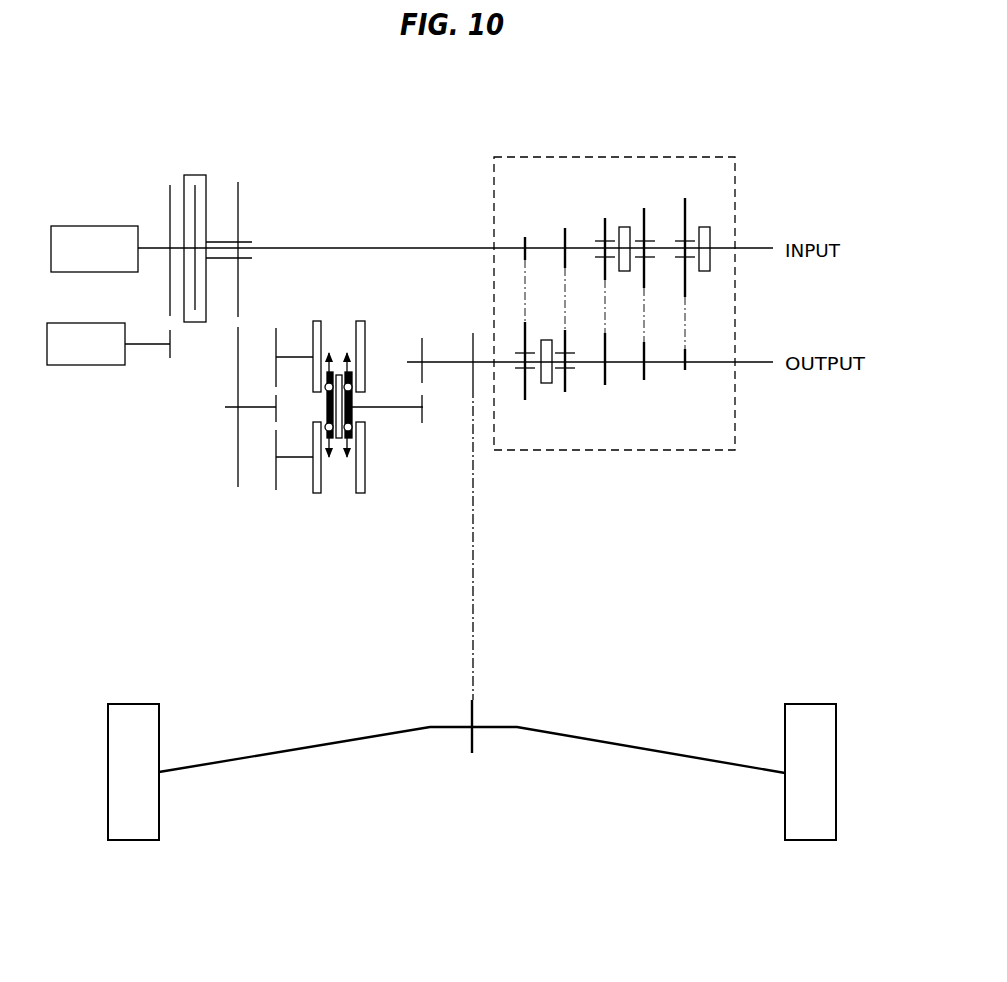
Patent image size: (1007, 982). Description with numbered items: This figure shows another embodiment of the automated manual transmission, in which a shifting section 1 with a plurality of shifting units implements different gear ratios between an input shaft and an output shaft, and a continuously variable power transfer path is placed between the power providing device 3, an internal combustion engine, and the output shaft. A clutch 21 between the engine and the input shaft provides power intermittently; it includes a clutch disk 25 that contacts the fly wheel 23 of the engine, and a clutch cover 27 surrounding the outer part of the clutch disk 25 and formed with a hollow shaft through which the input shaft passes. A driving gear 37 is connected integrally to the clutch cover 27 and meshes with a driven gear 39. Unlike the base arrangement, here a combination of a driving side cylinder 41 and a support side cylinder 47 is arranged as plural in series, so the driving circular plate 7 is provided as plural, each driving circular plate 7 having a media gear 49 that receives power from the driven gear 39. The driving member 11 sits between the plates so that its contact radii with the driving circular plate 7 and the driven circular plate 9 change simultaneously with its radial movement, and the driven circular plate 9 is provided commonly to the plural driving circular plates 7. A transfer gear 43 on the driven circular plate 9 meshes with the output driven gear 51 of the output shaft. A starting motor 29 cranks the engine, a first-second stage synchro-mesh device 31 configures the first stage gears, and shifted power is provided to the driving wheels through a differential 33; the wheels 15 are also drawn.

The shifting section 1 is at (614, 350).
The power providing device 3 is at (62, 232).
The driving circular plate 7 is at (330, 335).
The driven circular plate 9 is at (338, 440).
The driving member 11 is at (352, 383).
The wheels 15 is at (135, 710).
The clutch 21 is at (191, 195).
The fly wheel 23 is at (182, 196).
The clutch disk 25 is at (185, 195).
The clutch cover 27 is at (210, 193).
The starting motor 29 is at (85, 366).
The first-second stage synchro-mesh device 31 is at (546, 384).
The differential 33 is at (433, 700).
The driving gear 37 is at (243, 192).
The driven gear 39 is at (233, 447).
The driving side cylinder 41 is at (313, 330).
The transfer gear 43 is at (422, 424).
The support side cylinder 47 is at (360, 325).
The media gear 49 is at (276, 372).
The output driven gear 51 is at (424, 345).